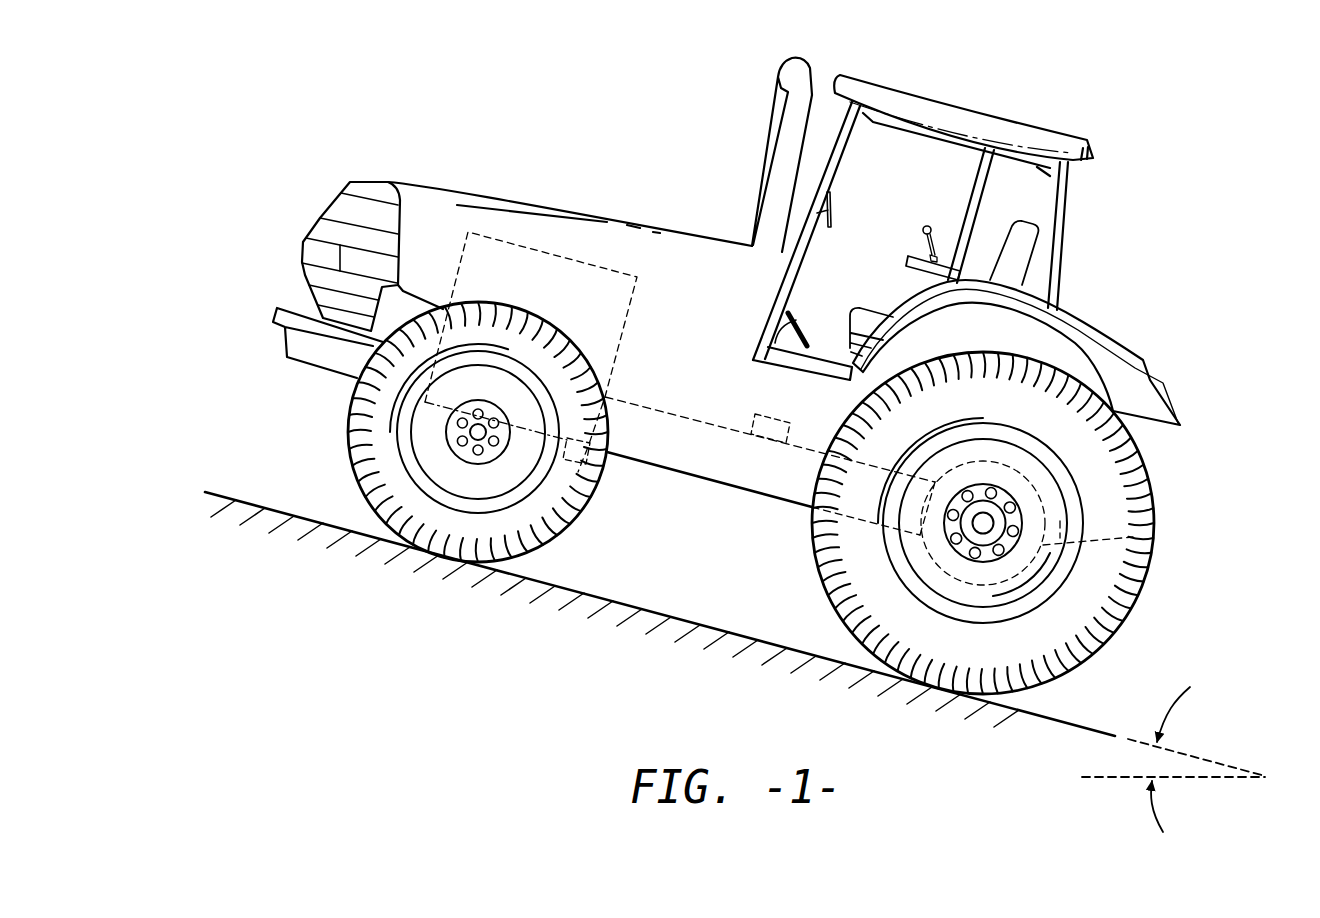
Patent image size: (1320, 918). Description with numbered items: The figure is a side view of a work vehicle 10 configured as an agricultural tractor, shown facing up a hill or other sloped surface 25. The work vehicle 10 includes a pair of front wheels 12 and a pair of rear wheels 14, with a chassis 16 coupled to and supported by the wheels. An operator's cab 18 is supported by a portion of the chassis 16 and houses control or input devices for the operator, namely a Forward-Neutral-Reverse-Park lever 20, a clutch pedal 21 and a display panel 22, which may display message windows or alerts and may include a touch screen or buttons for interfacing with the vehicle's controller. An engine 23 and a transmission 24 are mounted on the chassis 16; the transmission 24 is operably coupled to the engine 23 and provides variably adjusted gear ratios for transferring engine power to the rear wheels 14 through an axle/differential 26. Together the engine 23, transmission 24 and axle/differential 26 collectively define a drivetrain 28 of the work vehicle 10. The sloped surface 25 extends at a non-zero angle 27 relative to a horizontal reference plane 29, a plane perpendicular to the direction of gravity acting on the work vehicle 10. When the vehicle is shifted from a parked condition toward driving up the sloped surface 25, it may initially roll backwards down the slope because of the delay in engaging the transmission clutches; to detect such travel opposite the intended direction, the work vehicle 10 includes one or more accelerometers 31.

The work vehicle 10 is at (362, 124).
The front wheels 12 is at (350, 412).
The rear wheels 14 is at (1146, 597).
The chassis 16 is at (664, 468).
The operator's cab 18 is at (1067, 240).
The Forward-Neutral-Reverse-Park (FNRP) lever 20 is at (922, 228).
The clutch pedal 21 is at (806, 337).
The display panel 22 is at (831, 203).
The engine 23 is at (528, 247).
The transmission 24 is at (706, 423).
The sloped surface 25 is at (623, 603).
The axle/differential 26 is at (1133, 537).
The non-zero angle 27 is at (1176, 700).
The drivetrain 28 is at (694, 250).
The horizontal reference plane 29 is at (1197, 778).
The accelerometer 31 is at (766, 415).